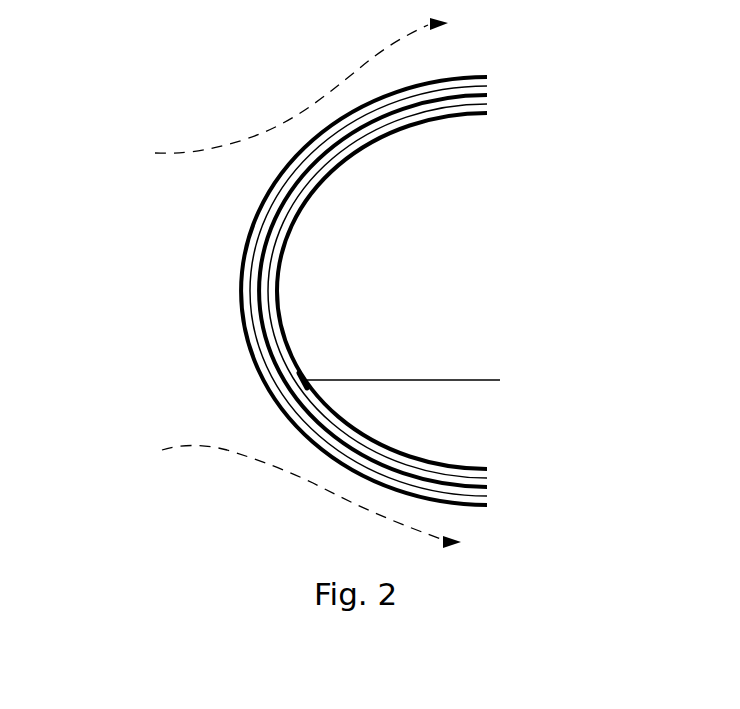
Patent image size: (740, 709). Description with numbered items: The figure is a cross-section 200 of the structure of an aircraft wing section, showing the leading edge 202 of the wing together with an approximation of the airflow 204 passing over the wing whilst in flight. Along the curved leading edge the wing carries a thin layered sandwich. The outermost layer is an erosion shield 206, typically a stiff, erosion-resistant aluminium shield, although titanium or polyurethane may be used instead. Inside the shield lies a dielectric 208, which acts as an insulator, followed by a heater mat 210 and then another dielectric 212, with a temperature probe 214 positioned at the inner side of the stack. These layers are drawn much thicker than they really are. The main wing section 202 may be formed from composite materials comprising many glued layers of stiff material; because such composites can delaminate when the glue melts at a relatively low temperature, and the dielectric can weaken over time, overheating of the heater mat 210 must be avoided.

The cross-section 200 is at (229, 47).
The leading edge 202 is at (417, 296).
The airflow 204 is at (243, 140).
The erosion shield 206 is at (248, 238).
The dielectric 208 is at (252, 267).
The heater mat 210 is at (260, 295).
The dielectric 212 is at (274, 333).
The temperature probe 214 is at (297, 373).